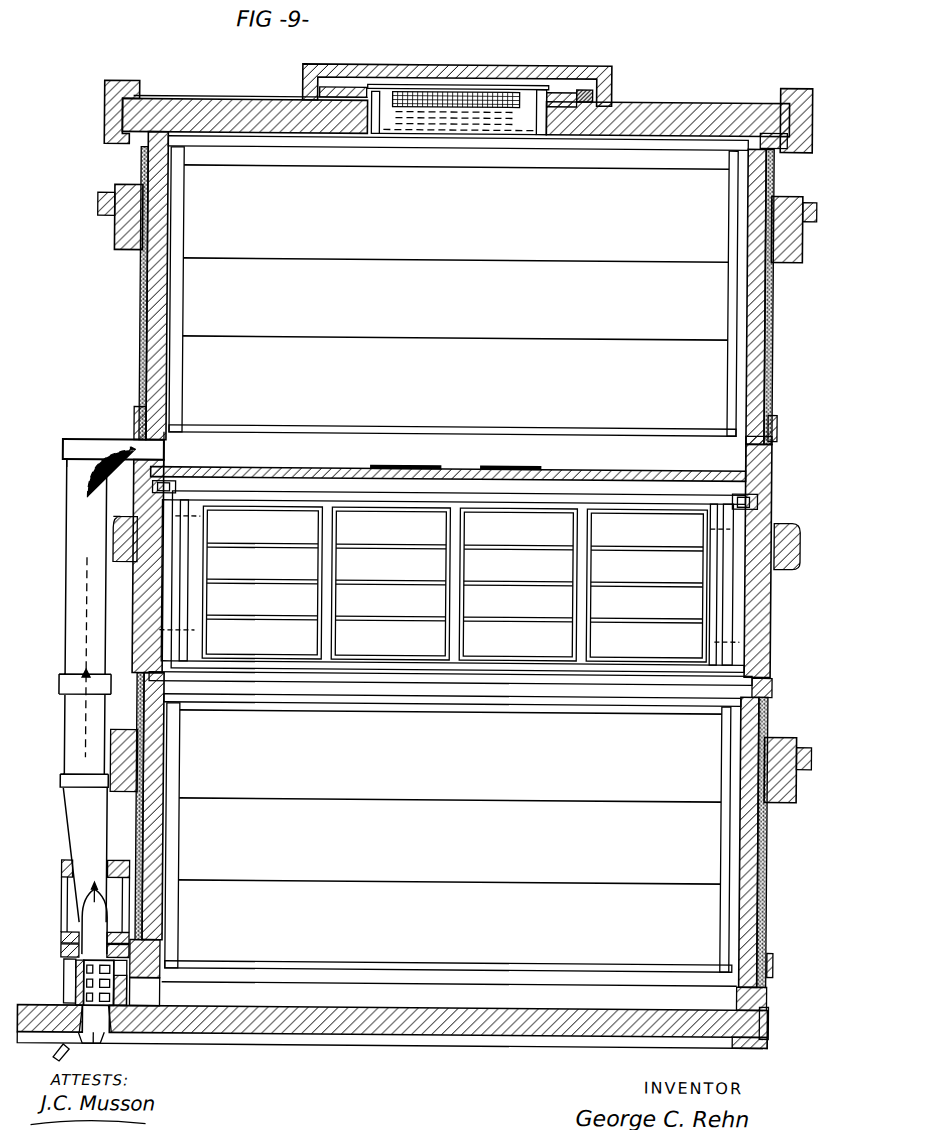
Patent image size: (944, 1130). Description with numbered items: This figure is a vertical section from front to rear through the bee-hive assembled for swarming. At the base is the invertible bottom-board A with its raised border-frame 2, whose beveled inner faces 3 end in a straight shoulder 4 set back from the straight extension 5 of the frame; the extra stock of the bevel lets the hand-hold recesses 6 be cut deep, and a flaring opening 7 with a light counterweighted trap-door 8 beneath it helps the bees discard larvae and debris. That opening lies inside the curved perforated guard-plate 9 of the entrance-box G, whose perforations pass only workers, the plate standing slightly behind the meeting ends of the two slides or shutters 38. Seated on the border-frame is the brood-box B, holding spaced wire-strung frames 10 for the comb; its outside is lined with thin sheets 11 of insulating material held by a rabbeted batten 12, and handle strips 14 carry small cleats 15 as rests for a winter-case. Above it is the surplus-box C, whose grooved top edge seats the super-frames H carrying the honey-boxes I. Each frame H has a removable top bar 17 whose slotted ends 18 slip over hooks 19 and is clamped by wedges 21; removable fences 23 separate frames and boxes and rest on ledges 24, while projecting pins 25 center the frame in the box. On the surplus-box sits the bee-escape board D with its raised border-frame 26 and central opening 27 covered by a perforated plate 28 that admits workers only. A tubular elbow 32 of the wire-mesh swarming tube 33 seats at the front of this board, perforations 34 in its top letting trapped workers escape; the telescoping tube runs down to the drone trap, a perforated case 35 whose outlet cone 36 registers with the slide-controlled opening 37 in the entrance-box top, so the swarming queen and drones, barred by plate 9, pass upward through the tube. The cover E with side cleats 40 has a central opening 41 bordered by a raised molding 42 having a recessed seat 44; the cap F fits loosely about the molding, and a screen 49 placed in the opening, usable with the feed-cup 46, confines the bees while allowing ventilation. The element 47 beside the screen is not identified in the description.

The bottom-board A is at (563, 1040).
The brood-box B is at (772, 335).
The super or surplus-box C is at (775, 631).
The bee-escape board D is at (778, 469).
The cover E is at (786, 139).
The cap F is at (605, 67).
The entrance-box G is at (64, 950).
The super-frames H is at (700, 608).
The honey-boxes I is at (518, 584).
The border-frame 2 is at (772, 1045).
The inner faces of the border-frame 3 is at (740, 1000).
The straight shoulder 4 is at (135, 975).
The straight extension 5 is at (128, 1036).
The hand-hold recesses 6 is at (772, 1012).
The flaring opening 7 is at (100, 1040).
The counterweighted trap-door 8 is at (88, 1046).
The guard-plate 9 is at (80, 990).
The wire-strung frame 10 is at (454, 24).
The sheets of insulating material 11 is at (772, 372).
The batten or border-piece 12 is at (777, 426).
The handle strips 14 is at (802, 250).
The cleats 15 is at (814, 210).
The top bar 17 is at (540, 505).
The slotted ends 18 is at (758, 505).
The hooks 19 is at (760, 492).
The wedges 21 is at (742, 489).
The fences 23 is at (630, 590).
The ledges 24 is at (718, 668).
The projecting pins 25 is at (740, 640).
The border-frame of bee-escape board 26 is at (778, 452).
The opening 27 is at (505, 470).
The perforated metal plate 28 is at (410, 470).
The tubular elbow 32 is at (62, 452).
The wire-mesh tube 33 is at (66, 585).
The perforations 34 is at (101, 441).
The rectangular case 35 is at (64, 866).
The outlet cone 36 is at (93, 928).
The slide-controlled opening 37 is at (64, 937).
The slides or shutters 38 is at (70, 968).
The side cleats 40 is at (138, 83).
The central opening 41 is at (541, 122).
The raised molding 42 is at (600, 96).
The recessed seat 44 is at (556, 90).
The feed-cup 46 is at (390, 137).
The vent plate 47 is at (541, 86).
The screen 49 is at (408, 93).